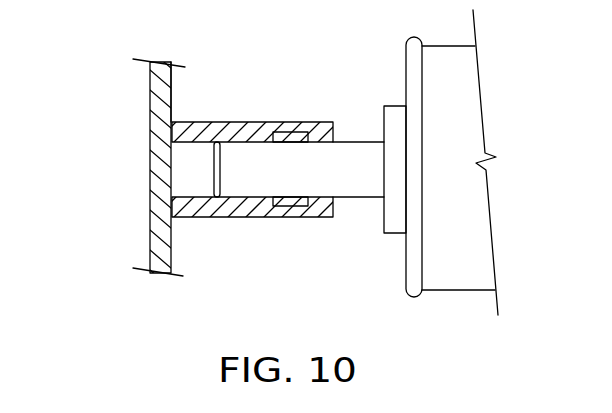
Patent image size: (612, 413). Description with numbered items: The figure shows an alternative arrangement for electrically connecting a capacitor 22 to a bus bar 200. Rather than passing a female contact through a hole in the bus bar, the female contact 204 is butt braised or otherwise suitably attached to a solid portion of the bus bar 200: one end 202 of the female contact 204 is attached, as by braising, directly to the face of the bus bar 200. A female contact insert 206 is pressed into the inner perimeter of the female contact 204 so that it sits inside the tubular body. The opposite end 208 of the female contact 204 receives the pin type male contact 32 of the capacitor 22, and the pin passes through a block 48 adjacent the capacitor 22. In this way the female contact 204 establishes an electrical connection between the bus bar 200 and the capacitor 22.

The capacitor 22 is at (470, 103).
The pin type male contact 32 is at (365, 142).
The block 48 is at (395, 228).
The bus bar 200 is at (151, 124).
The end of female contact 202 is at (172, 122).
The female contact 204 is at (221, 123).
The female contact insert 206 is at (285, 131).
The end of female contact 208 is at (333, 212).